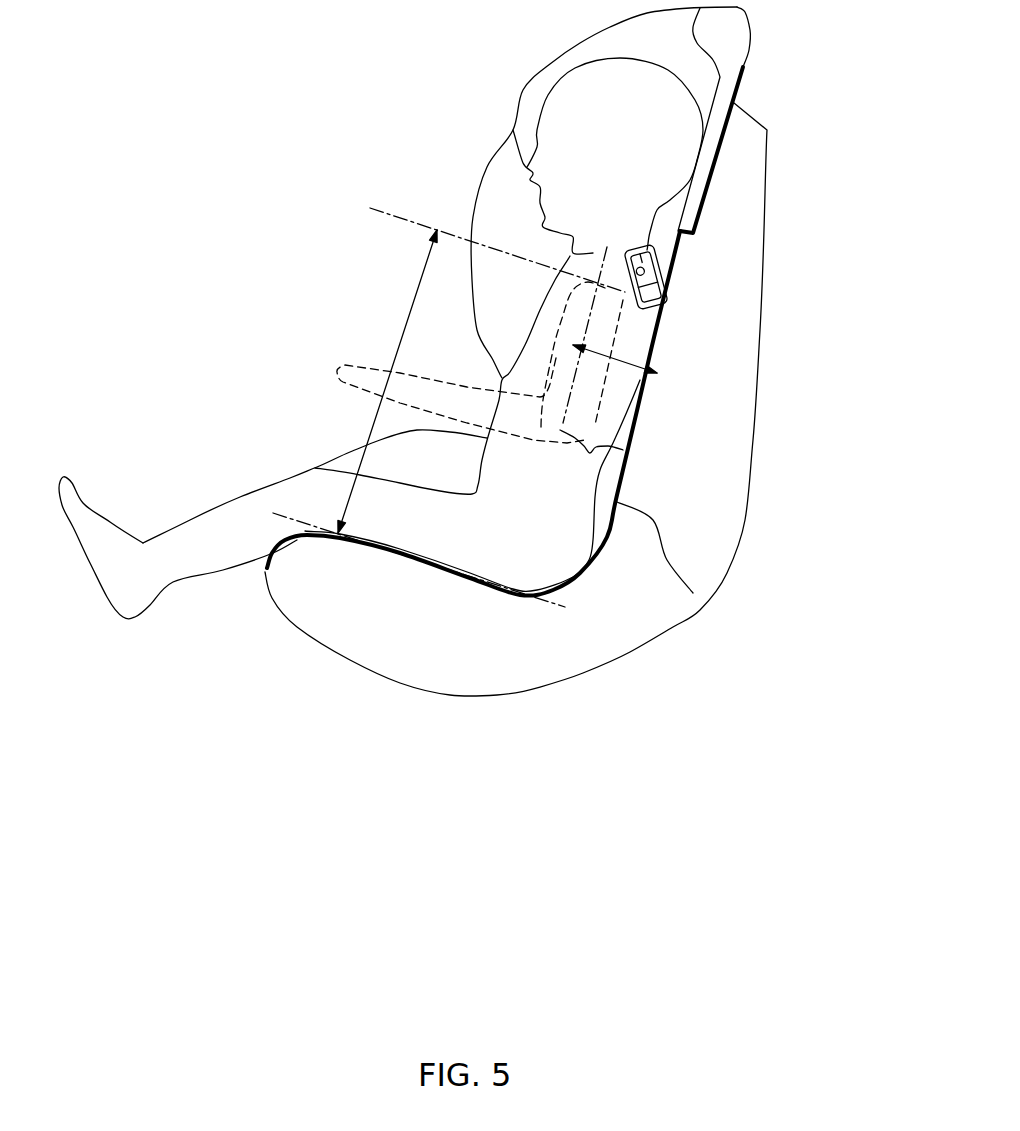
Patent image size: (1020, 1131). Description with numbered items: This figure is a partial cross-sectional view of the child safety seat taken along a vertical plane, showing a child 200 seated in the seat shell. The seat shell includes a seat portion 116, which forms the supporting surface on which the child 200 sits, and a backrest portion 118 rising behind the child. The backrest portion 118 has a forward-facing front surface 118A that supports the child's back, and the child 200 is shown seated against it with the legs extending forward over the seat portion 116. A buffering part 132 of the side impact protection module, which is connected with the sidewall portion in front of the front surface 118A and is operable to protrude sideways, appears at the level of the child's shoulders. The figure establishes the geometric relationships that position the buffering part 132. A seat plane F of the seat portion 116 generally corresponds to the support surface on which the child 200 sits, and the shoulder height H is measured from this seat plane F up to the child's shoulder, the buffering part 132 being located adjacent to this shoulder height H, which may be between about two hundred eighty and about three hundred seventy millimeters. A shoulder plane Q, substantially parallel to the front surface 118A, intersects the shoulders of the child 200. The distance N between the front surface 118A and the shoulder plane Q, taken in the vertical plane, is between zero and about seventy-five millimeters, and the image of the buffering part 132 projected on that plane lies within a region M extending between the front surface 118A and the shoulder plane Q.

The seat portion 116 is at (322, 625).
The backrest portion 118 is at (745, 335).
The front surface 118A is at (693, 593).
The buffering part 132 is at (663, 262).
The child 200 is at (573, 73).
The shoulder plane Q is at (600, 253).
The shoulder height H is at (419, 418).
The distance N is at (615, 352).
The region M is at (591, 457).
The seat plane F is at (547, 603).